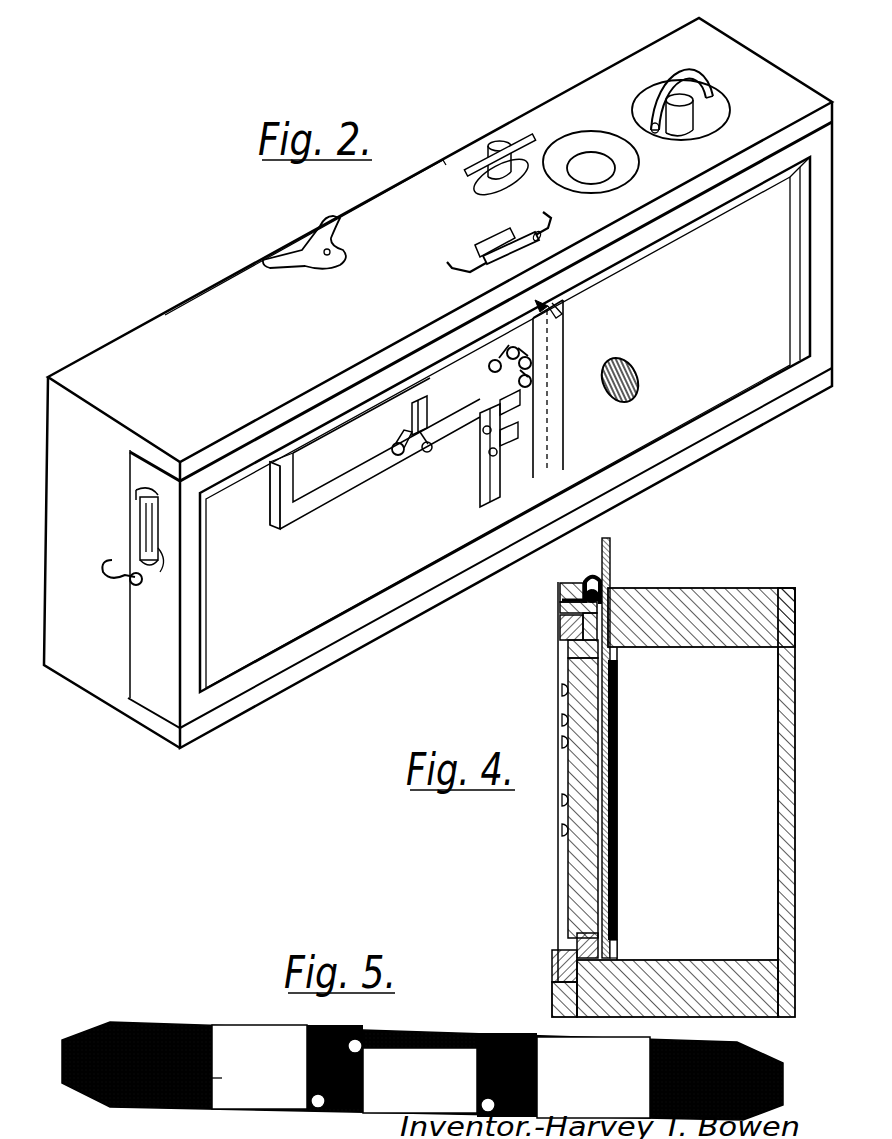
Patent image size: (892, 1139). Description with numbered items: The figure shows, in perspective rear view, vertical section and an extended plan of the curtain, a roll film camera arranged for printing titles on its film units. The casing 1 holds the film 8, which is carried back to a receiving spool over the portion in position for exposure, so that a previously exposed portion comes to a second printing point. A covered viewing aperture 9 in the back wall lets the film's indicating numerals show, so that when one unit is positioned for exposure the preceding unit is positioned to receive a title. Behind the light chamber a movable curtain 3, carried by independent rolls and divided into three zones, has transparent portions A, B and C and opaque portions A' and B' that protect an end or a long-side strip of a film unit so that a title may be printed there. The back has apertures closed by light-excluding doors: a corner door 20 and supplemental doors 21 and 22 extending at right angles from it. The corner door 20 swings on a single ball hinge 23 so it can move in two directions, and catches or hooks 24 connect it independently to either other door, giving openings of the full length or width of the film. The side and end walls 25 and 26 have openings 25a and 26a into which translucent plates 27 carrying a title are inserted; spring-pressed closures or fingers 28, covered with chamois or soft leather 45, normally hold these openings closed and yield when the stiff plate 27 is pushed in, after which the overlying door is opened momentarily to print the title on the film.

In FIG. 4, the casing 1 is at (673, 799).
In FIG. 4, the movable curtain 3 is at (616, 830).
In FIG. 5, the movable curtain 3 is at (497, 1036).
In FIG. 4, the film 8 is at (616, 794).
In FIG. 2, the viewing aperture 9 is at (634, 376).
In FIG. 2, the corner door 20 is at (538, 329).
In FIG. 4, the corner door 20 is at (567, 673).
In FIG. 2, the supplemental door 21 is at (371, 447).
In FIG. 2, the supplemental door 22 is at (508, 478).
In FIG. 4, the supplemental door 22 is at (580, 851).
In FIG. 2, the ball hinge 23 is at (549, 304).
In FIG. 2, the catches or hooks 24 is at (528, 362).
In FIG. 2, the side wall 25 is at (481, 301).
In FIG. 4, the side wall 25 is at (703, 588).
In FIG. 2, the aperture or opening 25a is at (487, 250).
In FIG. 4, the aperture or opening 25a is at (647, 589).
In FIG. 2, the end wall 26 is at (97, 574).
In FIG. 2, the aperture or opening 26a is at (145, 521).
In FIG. 4, the translucent sheet or plate 27 is at (611, 557).
In FIG. 2, the spring-pressed closure 28 is at (525, 236).
In FIG. 4, the spring-pressed closure 28 is at (583, 580).
In FIG. 4, the chamois covering 45 is at (590, 578).